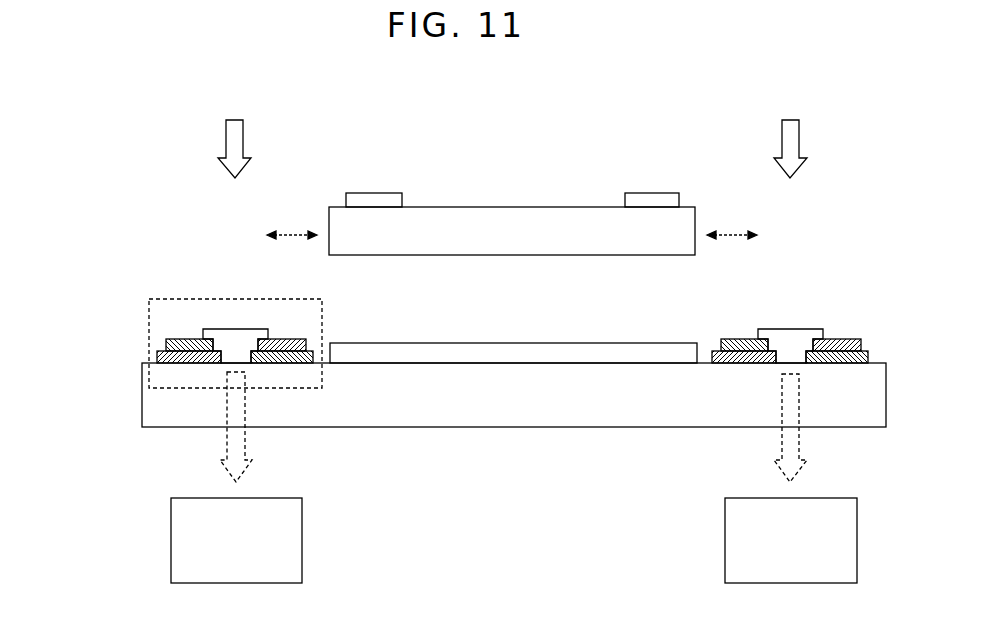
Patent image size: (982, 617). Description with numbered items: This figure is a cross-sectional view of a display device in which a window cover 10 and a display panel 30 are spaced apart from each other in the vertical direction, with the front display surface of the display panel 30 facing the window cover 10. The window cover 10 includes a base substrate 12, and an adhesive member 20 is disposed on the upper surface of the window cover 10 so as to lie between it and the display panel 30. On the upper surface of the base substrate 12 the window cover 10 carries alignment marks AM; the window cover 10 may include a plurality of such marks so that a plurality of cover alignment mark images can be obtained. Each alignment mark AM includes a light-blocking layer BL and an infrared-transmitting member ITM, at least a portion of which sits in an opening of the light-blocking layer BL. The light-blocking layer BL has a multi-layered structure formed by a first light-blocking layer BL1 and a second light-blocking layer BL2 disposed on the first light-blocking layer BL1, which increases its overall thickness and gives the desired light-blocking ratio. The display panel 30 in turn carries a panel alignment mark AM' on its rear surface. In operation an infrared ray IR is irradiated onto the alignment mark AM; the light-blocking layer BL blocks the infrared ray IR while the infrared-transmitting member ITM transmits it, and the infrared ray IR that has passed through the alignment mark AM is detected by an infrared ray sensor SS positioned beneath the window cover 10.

The window cover 10 is at (488, 339).
The base substrate 12 is at (142, 400).
The adhesive member 20 is at (532, 342).
The display panel 30 is at (536, 212).
The alignment mark AM is at (235, 319).
The panel alignment mark AM' is at (512, 176).
The infrared-transmitting member ITM is at (227, 336).
The light-blocking layer BL is at (452, 344).
The first light-blocking layer BL1 is at (158, 357).
The second light-blocking layer BL2 is at (164, 341).
The infrared ray IR is at (512, 133).
The infrared ray sensor SS is at (171, 540).